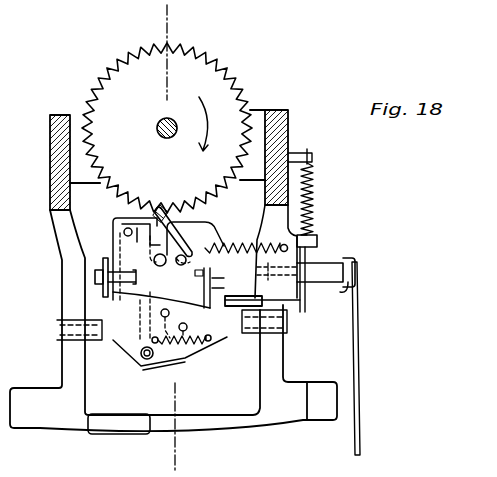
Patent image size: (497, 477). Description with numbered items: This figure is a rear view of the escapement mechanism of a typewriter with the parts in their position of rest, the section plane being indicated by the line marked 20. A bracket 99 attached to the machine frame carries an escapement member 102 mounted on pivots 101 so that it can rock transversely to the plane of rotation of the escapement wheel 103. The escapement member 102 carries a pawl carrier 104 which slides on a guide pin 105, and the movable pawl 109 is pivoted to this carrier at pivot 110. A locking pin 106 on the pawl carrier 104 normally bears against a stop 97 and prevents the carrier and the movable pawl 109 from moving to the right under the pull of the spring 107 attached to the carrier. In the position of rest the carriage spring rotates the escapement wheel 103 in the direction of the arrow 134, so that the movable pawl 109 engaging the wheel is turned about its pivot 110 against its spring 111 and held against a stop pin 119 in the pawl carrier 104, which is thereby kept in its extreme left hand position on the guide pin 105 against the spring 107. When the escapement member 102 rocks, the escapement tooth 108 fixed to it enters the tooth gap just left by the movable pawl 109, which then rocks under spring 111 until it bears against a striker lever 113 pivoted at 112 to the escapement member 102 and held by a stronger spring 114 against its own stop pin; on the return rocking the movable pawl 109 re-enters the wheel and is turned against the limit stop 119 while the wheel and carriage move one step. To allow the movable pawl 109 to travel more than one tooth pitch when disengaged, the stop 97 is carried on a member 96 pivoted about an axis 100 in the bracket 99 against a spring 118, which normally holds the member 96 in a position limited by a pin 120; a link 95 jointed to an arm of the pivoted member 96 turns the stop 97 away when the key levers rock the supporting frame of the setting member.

The section line 20 is at (175, 20).
The escapement wheel 103 is at (133, 52).
The arrow 134 is at (215, 122).
The escapement tooth 108 is at (160, 210).
The movable pawl 109 is at (173, 227).
The spring 107 is at (241, 247).
The spring 118 is at (314, 195).
The pin 120 is at (316, 240).
The axis 100 is at (316, 268).
The pivoted member 96 is at (341, 288).
The link 95 is at (359, 346).
The stop 97 is at (304, 312).
The locking pin 106 is at (289, 299).
The spring 111 is at (182, 276).
The guide pin 105 is at (136, 259).
The stop pin 119 is at (124, 232).
The pivot 110 is at (166, 251).
The pawl carrier 104 is at (130, 290).
The pivots 101 is at (58, 339).
The escapement member 102 is at (222, 338).
The striker lever 113 is at (135, 349).
The pivot 112 is at (145, 360).
The spring 114 is at (191, 346).
The bracket 99 is at (268, 424).